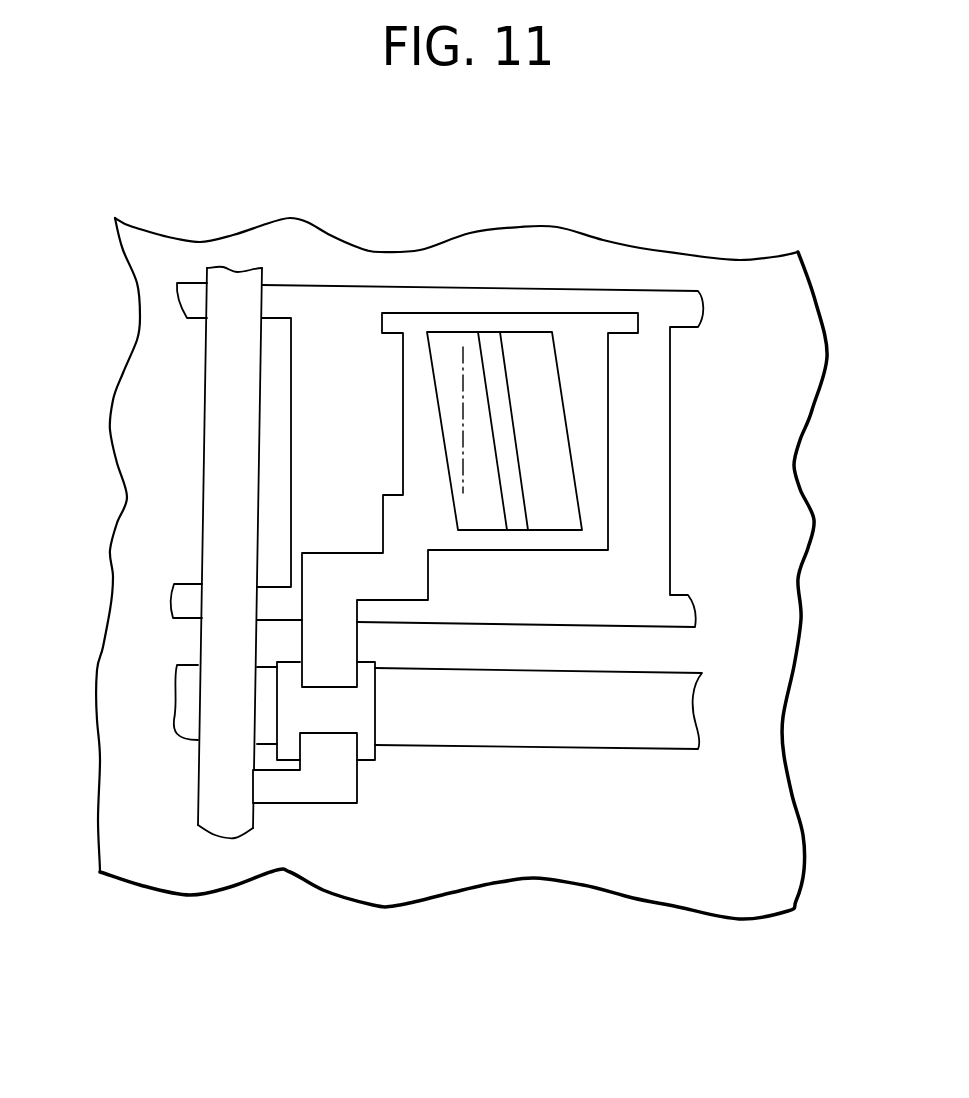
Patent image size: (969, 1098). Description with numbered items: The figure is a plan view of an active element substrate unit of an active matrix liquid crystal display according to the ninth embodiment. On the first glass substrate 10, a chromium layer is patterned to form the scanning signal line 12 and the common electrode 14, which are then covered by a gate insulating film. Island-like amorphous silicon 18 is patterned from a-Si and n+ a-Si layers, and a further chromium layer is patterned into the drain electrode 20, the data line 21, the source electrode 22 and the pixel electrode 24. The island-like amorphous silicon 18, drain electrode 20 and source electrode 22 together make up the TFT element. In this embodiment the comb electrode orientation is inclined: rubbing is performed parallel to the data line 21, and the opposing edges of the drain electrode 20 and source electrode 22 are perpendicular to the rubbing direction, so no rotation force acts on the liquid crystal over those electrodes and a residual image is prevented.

The first glass substrate 10 is at (769, 522).
The scanning signal line 12 is at (193, 710).
The common electrode 14 is at (187, 605).
The island-like amorphous silicon 18 is at (365, 712).
The drain electrode 20 is at (302, 788).
The data line 21 is at (222, 421).
The source electrode 22 is at (313, 645).
The pixel electrode 24 is at (572, 382).